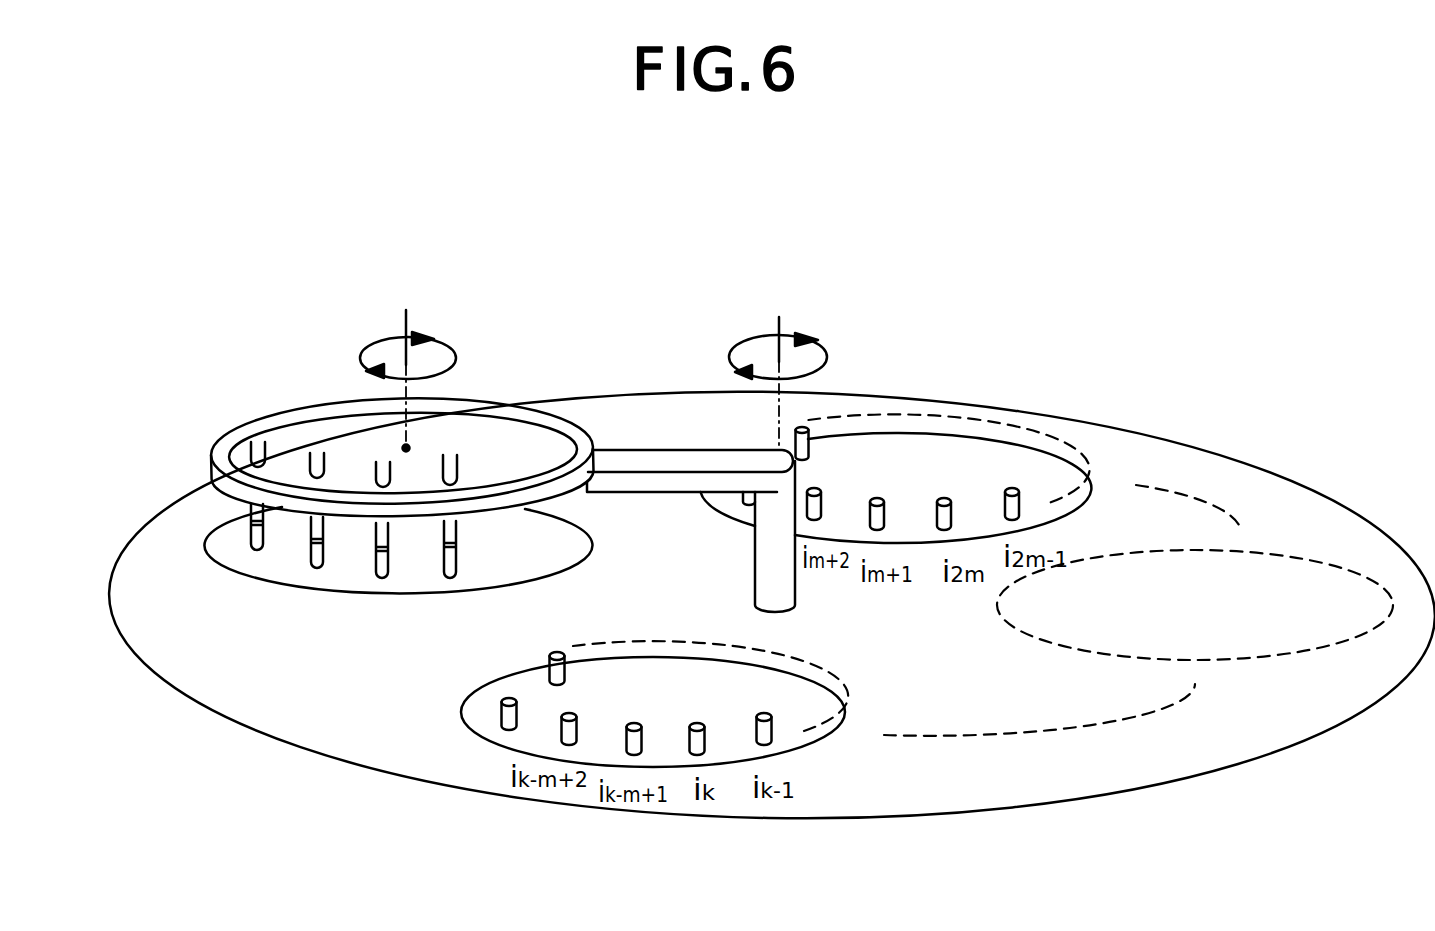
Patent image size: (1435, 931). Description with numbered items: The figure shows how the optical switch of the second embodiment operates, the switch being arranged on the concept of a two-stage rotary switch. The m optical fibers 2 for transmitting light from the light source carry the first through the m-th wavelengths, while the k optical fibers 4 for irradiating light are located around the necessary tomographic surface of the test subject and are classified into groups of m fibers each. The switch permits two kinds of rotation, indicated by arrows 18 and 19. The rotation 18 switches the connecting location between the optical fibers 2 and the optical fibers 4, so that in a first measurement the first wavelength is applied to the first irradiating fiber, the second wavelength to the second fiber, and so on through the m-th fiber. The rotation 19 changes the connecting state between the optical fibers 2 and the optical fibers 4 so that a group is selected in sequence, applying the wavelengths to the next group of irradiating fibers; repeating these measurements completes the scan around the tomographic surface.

The optical fibers for transmitting light 2 is at (454, 478).
The optical fibers for irradiating light 4 is at (456, 564).
The rotation 18 is at (434, 338).
The rotation 19 is at (826, 352).